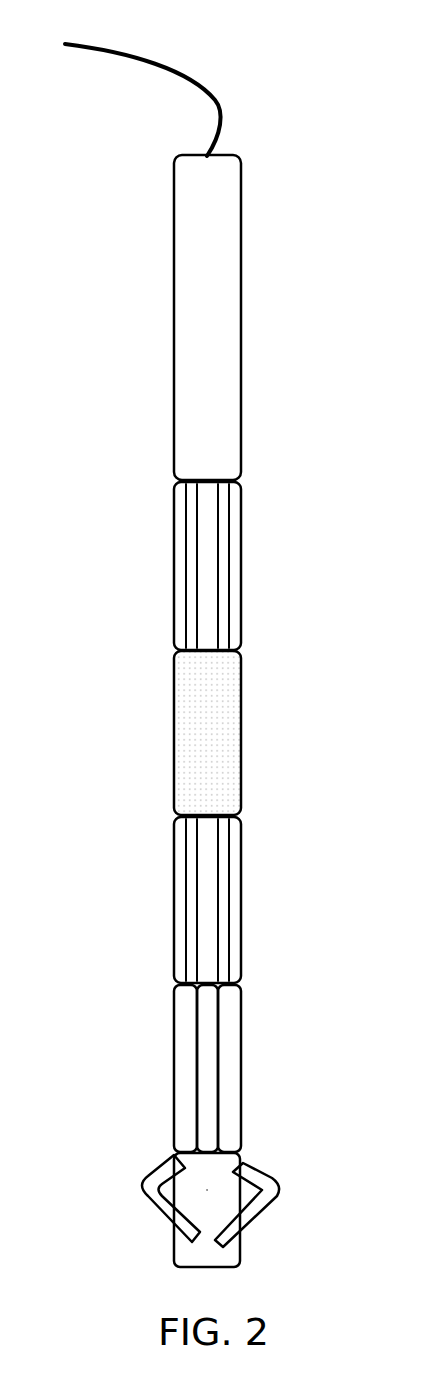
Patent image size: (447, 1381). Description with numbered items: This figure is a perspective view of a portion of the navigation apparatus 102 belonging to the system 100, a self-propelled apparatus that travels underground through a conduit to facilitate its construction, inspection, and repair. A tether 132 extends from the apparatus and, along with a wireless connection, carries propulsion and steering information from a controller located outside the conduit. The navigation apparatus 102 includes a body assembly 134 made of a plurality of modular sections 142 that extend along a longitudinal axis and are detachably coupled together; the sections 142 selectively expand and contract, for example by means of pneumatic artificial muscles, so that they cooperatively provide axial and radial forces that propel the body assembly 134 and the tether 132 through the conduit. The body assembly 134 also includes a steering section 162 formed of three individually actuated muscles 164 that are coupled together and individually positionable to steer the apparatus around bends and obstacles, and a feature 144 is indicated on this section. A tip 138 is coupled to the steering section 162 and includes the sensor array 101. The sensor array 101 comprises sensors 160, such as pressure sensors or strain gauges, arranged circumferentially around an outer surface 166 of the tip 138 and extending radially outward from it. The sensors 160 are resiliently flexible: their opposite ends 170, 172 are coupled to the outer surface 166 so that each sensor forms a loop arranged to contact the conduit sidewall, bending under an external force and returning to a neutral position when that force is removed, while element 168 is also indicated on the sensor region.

The system 100 is at (260, 68).
The tether 132 is at (152, 67).
The body assembly 134 is at (169, 518).
The navigation apparatus 102 is at (192, 831).
The sections 142 is at (184, 837).
The sensor array 101 is at (228, 835).
The steering section 162 is at (194, 1068).
The individually actuated muscles 164 is at (175, 1080).
The lumen 144 is at (257, 1068).
The sensors 160 is at (241, 1206).
The outer surface 166 is at (218, 1258).
The tip 138 is at (207, 1190).
The right arm 168 is at (273, 1167).
The end 170 is at (193, 1234).
The end 172 is at (146, 1192).